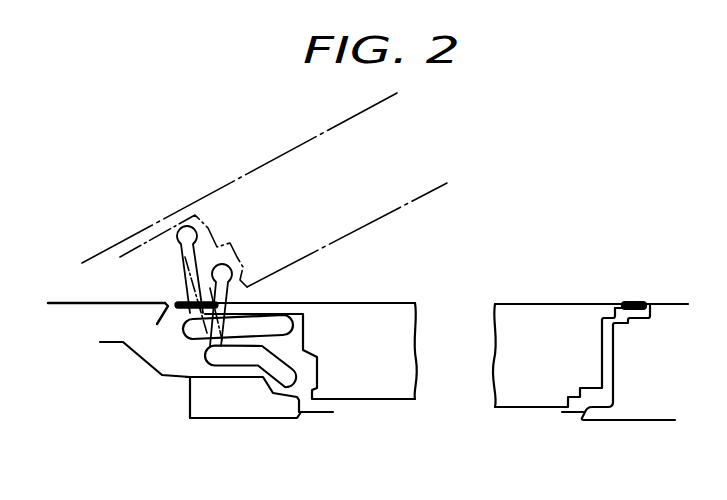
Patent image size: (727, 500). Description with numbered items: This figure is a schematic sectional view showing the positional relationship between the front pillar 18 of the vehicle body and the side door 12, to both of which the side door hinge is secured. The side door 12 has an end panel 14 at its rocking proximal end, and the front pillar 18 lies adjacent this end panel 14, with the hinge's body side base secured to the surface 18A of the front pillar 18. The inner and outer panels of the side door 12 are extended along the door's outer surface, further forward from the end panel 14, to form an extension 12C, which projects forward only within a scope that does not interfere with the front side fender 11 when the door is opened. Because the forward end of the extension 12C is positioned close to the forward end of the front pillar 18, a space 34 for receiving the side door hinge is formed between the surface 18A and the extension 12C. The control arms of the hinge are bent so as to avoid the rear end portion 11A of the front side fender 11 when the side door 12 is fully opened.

The front side fender 11 is at (70, 302).
The rear end portion of the front side fender 11A is at (157, 300).
The side door 12 is at (518, 302).
The extension 12C is at (177, 300).
The end panel 14 is at (316, 376).
The front pillar 18 is at (250, 418).
The surface of the front pillar 18A is at (206, 372).
The space 34 is at (188, 350).